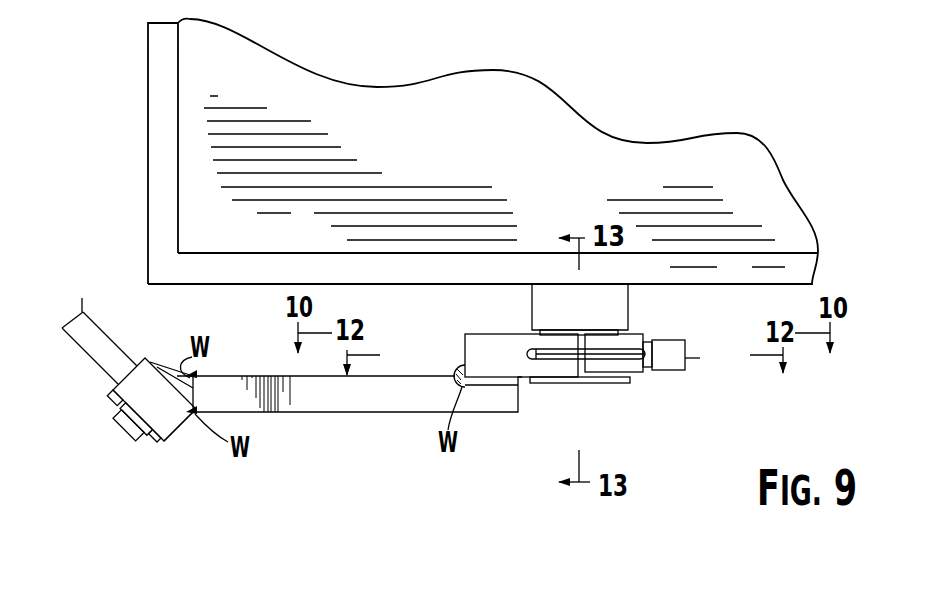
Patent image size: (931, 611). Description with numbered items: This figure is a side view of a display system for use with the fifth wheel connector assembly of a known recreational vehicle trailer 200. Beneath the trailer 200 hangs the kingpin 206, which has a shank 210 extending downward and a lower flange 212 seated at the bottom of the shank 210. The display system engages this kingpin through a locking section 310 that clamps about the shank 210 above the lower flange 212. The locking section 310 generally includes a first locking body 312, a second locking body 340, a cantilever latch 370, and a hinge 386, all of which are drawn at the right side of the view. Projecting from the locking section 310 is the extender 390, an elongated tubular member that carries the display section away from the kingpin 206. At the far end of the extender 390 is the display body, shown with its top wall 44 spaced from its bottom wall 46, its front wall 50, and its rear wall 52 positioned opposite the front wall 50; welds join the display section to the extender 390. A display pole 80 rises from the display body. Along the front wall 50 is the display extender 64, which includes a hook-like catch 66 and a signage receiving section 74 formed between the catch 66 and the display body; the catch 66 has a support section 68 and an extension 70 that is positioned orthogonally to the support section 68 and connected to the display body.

The recreational vehicle trailer 200 is at (148, 148).
The kingpin 206 is at (628, 303).
The shank 210 is at (627, 332).
The locking section 310 is at (492, 322).
The first locking body 312 is at (483, 350).
The lower flange 212 is at (577, 383).
The hinge 386 is at (593, 357).
The second locking body 340 is at (636, 371).
The cantilever latch 370 is at (700, 358).
The extender 390 is at (357, 411).
The display pole 80 is at (73, 320).
The top wall 44 is at (130, 356).
The front wall 50 is at (113, 391).
The rear wall 52 is at (147, 357).
The signage receiving section 74 is at (105, 399).
The display extender 64 is at (112, 418).
The catch 66 is at (124, 431).
The support section 68 is at (130, 440).
The extension 70 is at (145, 445).
The bottom wall 46 is at (175, 435).